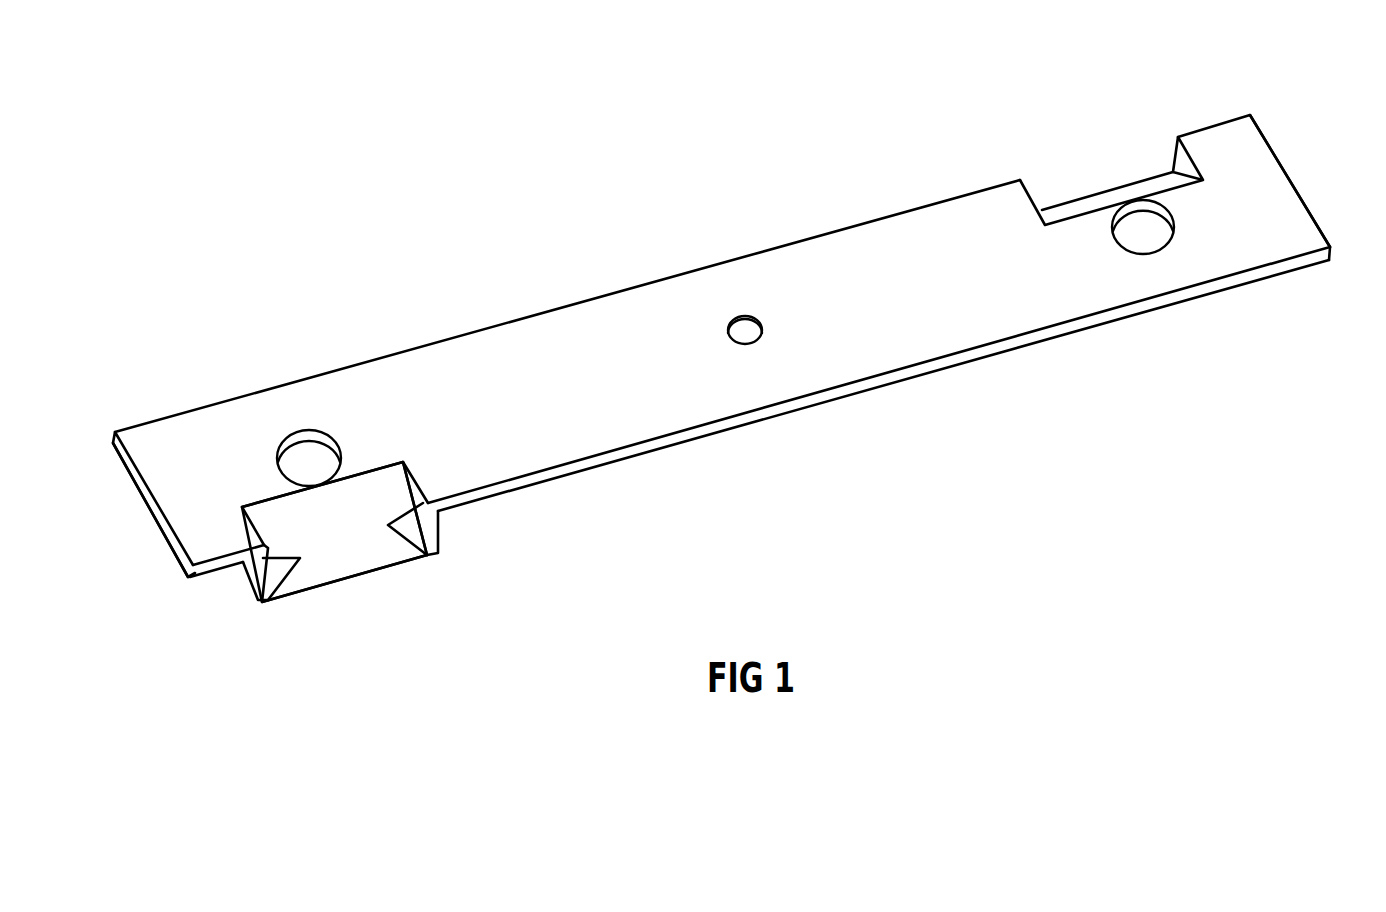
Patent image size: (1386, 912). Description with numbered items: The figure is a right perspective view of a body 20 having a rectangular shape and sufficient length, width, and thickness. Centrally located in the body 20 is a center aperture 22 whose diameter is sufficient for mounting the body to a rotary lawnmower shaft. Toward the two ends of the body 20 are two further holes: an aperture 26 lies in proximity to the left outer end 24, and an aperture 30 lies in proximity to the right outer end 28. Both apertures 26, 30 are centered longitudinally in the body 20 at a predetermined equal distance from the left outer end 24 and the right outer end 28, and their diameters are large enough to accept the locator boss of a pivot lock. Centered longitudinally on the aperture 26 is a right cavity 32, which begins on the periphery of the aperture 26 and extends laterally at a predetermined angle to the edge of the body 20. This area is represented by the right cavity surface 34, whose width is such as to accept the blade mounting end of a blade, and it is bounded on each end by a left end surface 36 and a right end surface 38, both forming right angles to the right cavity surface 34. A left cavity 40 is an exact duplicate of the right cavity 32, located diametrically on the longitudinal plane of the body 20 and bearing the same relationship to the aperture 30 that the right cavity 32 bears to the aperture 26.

The body 20 is at (735, 280).
The center aperture 22 is at (745, 335).
The left outer end 24 is at (150, 505).
The aperture 26 is at (302, 450).
The right outer end 28 is at (1295, 182).
The aperture 30 is at (1143, 240).
The right cavity 32 is at (347, 583).
The right cavity surface 34 is at (357, 552).
The left end surface 36 is at (272, 600).
The right end surface 38 is at (427, 557).
The left cavity 40 is at (1108, 190).